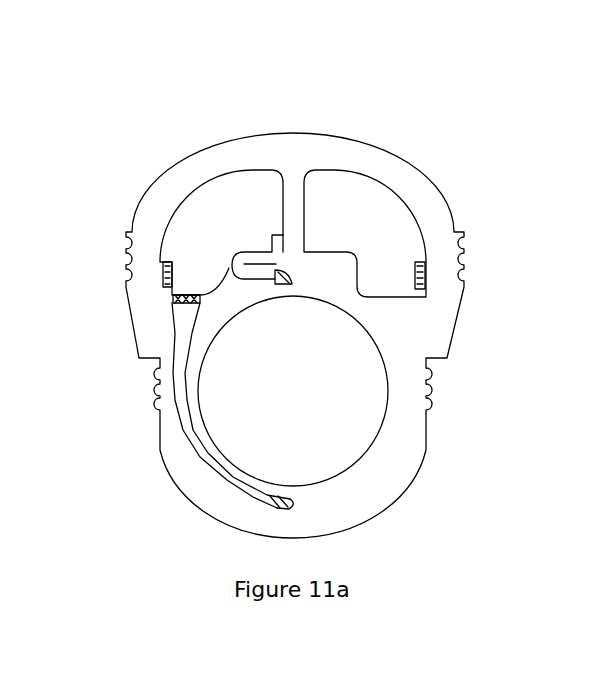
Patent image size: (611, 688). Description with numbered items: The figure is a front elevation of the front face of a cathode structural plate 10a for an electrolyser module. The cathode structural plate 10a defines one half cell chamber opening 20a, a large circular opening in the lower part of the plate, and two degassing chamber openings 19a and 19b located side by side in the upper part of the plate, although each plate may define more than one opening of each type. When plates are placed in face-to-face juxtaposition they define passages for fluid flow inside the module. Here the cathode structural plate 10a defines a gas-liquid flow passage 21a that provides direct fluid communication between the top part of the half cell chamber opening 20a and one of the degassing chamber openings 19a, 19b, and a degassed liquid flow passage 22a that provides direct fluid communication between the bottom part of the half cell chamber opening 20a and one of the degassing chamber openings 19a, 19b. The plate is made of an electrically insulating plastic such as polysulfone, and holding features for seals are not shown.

The cathode structural plate 10a is at (413, 158).
The degassing chamber opening 19a is at (245, 198).
The degassing chamber opening 19b is at (350, 208).
The half cell chamber opening 20a is at (303, 415).
The gas-liquid flow passage 21a is at (247, 258).
The degassed liquid flow passage 22a is at (231, 482).